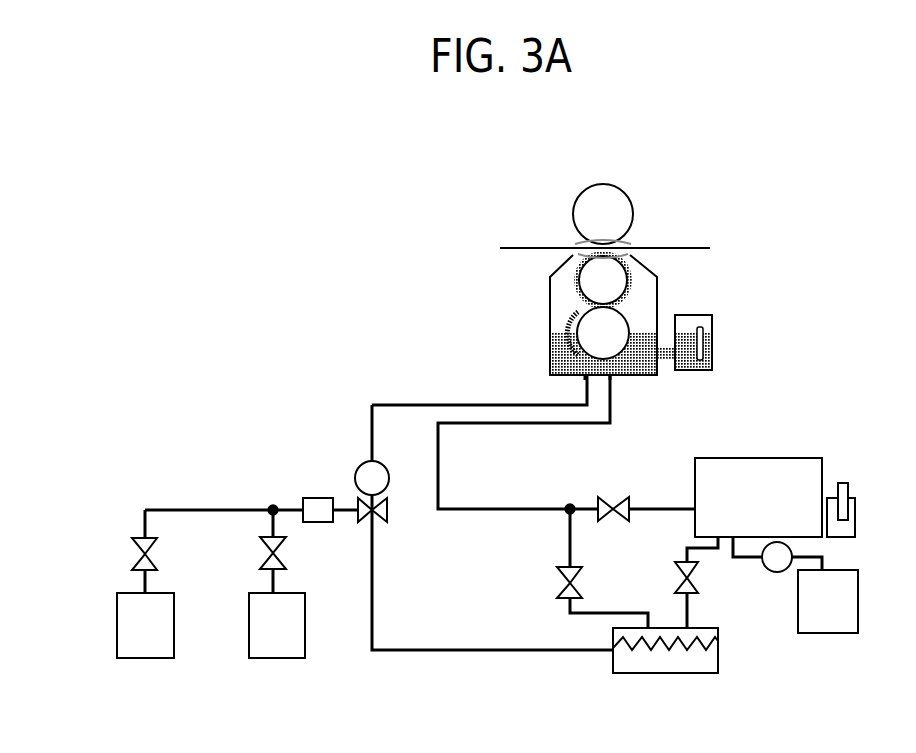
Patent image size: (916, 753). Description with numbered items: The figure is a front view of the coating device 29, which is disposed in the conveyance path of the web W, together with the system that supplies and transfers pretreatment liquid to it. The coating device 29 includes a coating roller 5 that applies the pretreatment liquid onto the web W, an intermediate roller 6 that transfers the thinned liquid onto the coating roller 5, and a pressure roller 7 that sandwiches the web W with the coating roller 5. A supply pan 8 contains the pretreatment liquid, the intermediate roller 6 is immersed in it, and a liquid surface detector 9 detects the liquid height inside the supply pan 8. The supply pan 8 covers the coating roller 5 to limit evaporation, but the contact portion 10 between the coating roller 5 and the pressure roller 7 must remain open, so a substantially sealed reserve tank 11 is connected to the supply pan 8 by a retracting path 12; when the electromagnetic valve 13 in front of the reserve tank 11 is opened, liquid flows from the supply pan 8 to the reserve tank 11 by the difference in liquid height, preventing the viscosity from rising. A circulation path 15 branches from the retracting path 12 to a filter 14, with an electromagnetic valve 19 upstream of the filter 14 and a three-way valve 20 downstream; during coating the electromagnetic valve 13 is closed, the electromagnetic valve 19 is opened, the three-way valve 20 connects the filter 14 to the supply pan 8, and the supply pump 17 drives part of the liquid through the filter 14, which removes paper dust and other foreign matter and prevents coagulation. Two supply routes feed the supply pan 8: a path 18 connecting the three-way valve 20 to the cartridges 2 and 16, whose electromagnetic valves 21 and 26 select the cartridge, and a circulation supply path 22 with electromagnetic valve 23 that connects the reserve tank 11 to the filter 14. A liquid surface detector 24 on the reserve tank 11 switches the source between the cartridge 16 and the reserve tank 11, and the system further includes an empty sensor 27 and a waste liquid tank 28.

The cartridge 2 is at (133, 621).
The coating roller 5 is at (592, 279).
The intermediate roller 6 is at (590, 322).
The pressure roller 7 is at (613, 198).
The supply pan 8 is at (552, 355).
The liquid surface detector 9 is at (713, 350).
The contact portion 10 is at (630, 240).
The reserve tank 11 is at (758, 472).
The retracting path 12 is at (508, 508).
The electromagnetic valve 13 is at (604, 498).
The filter 14 is at (703, 663).
The circulation path 15 is at (568, 536).
The cartridge 16 is at (262, 622).
The supply pump 17 is at (361, 470).
The path 18 is at (212, 508).
The electromagnetic valve 19 is at (560, 586).
The three-way valve 20 is at (378, 520).
The electromagnetic valve 21 is at (143, 561).
The circulation supply path 22 is at (690, 610).
The electromagnetic valve 23 is at (698, 567).
The liquid surface detector 24 is at (845, 528).
The electromagnetic valve 26 is at (267, 557).
The empty sensor 27 is at (313, 507).
The waste liquid tank 28 is at (843, 603).
The coating device 29 is at (714, 143).
The web W is at (670, 250).